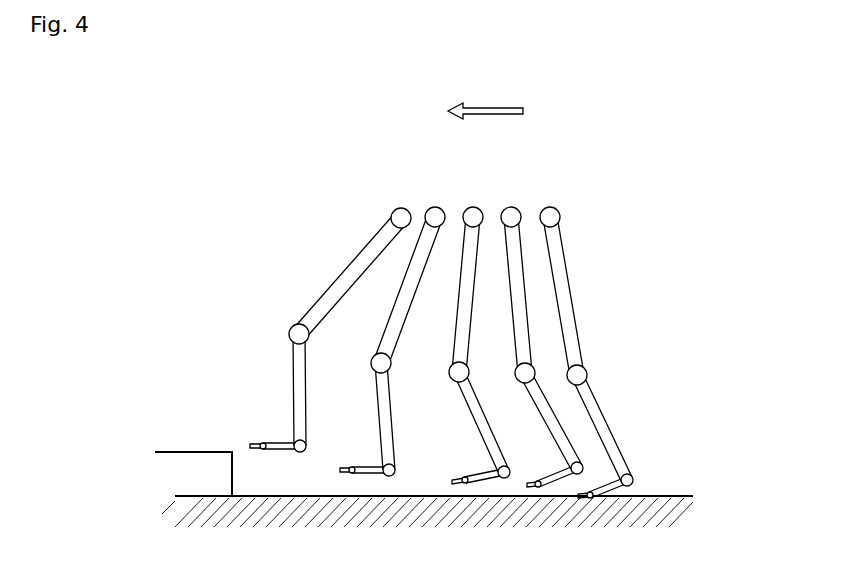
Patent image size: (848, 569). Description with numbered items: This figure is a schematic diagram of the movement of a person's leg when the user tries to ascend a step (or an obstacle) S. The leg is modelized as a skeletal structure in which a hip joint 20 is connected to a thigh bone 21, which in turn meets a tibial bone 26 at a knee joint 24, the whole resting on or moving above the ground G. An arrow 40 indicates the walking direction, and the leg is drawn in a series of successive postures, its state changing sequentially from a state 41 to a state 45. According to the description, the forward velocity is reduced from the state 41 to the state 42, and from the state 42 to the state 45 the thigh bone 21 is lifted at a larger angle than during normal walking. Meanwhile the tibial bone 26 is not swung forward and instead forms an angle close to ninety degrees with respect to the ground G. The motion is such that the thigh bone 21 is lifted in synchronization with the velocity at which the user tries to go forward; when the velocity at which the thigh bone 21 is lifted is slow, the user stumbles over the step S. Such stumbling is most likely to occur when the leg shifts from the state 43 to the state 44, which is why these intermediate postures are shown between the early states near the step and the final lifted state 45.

The hip joint 20 is at (550, 219).
The thigh bone 21 is at (563, 278).
The knee joint 24 is at (577, 375).
The tibial bone 26 is at (603, 428).
The arrow 40 is at (485, 100).
The state 41 is at (609, 313).
The state 42 is at (516, 193).
The state 43 is at (474, 194).
The state 44 is at (436, 193).
The state 45 is at (402, 194).
The step S is at (203, 452).
The ground G is at (678, 497).